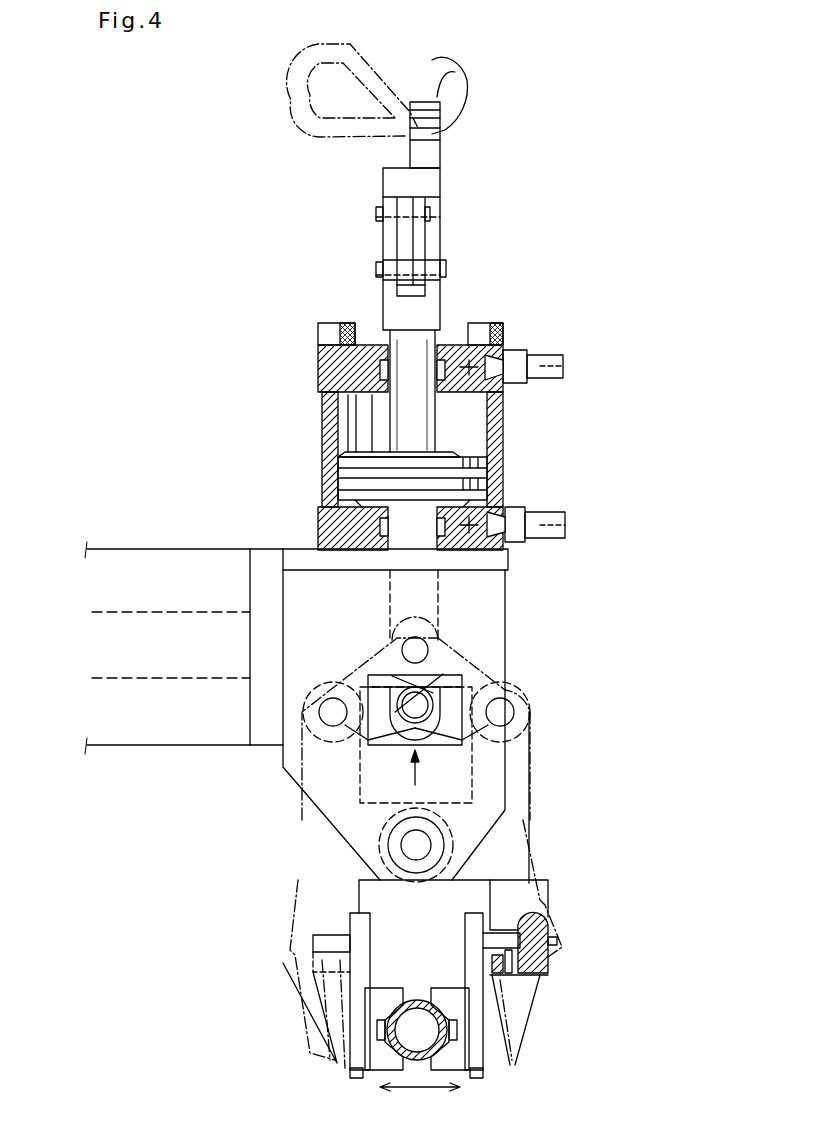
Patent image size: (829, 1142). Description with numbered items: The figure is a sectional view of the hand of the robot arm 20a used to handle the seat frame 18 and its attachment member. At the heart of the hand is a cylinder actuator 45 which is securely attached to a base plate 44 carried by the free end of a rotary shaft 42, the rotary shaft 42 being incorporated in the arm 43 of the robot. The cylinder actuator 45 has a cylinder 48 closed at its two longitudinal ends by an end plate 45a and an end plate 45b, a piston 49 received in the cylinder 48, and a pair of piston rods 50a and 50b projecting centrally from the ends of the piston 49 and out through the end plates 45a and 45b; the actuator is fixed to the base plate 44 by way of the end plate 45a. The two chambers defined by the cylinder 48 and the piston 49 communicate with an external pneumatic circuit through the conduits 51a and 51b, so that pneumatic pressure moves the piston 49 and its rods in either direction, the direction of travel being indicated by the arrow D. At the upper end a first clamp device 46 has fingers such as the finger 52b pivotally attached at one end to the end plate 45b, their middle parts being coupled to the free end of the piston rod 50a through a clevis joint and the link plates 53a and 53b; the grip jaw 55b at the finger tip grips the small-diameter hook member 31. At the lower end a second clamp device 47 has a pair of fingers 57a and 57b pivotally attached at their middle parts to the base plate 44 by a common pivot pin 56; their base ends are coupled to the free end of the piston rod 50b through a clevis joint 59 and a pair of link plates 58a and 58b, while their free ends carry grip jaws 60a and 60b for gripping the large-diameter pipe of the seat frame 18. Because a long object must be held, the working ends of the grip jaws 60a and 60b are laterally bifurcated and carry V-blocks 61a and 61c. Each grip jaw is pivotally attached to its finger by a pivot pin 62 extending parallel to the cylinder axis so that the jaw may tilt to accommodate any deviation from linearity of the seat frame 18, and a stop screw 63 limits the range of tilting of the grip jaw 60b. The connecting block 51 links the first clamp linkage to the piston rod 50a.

The seat frame 18 is at (418, 1000).
The robot arm 20a is at (620, 491).
The hook member 31 is at (300, 134).
The rotary shaft 42 is at (190, 680).
The arm 43 is at (188, 745).
The base plate 44 is at (293, 549).
The cylinder actuator 45 is at (312, 431).
The end plate 45a is at (320, 520).
The end plate 45b is at (370, 345).
The first clamp device 46 is at (364, 262).
The second clamp device 47 is at (550, 805).
The cylinder 48 is at (490, 433).
The piston 49 is at (488, 473).
The piston rod 50a is at (430, 338).
The piston rod 50b is at (438, 586).
The connecting block 51 is at (385, 298).
The conduit 51a is at (500, 540).
The conduit 51b is at (510, 350).
The finger 52b is at (440, 228).
The link plate 53a is at (422, 250).
The link plate 53b is at (398, 241).
The grip jaw 55b is at (436, 146).
The pivot pin 56 is at (402, 845).
The finger 57a is at (305, 925).
The finger 57b is at (523, 850).
The link plate 58a is at (375, 743).
The link plate 58b is at (458, 745).
The clevis joint 59 is at (430, 678).
The grip jaw 60a is at (355, 1072).
The grip jaw 60b is at (478, 1072).
The V-block 61a is at (378, 1070).
The V-block 61c is at (458, 1070).
The pivot pin 62 is at (505, 975).
The stop screw 63 is at (558, 940).
The direction of movement D is at (412, 780).